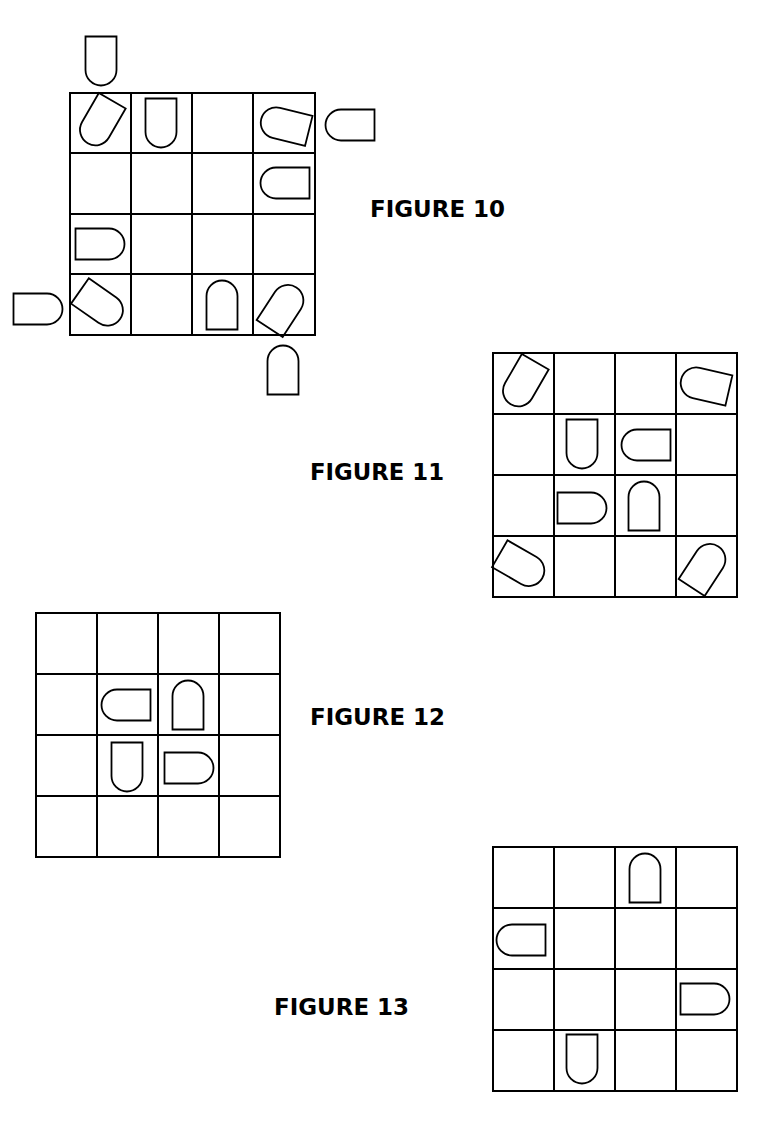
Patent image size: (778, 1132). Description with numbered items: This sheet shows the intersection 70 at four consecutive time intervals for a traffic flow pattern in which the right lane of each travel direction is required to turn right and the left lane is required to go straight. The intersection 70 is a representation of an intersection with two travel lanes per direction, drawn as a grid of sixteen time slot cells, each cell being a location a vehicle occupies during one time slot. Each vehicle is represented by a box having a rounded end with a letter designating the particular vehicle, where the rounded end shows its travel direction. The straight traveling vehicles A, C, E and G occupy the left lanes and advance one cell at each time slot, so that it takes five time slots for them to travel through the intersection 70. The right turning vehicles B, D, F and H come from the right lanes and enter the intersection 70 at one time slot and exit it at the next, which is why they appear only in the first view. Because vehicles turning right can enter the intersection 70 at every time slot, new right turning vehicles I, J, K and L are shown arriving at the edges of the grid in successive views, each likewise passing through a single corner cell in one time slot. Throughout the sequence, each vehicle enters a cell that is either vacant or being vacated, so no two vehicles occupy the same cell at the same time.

In FIG. 10, the intersection 70 is at (291, 57).
In FIG. 11, the intersection 70 is at (633, 319).
In FIG. 12, the intersection 70 is at (159, 587).
In FIG. 13, the intersection 70 is at (619, 821).
In FIG. 10, the straight traveling vehicle A is at (222, 305).
In FIG. 11, the straight traveling vehicle A is at (644, 506).
In FIG. 12, the straight traveling vehicle A is at (188, 705).
In FIG. 13, the straight traveling vehicle A is at (645, 878).
In FIG. 10, the right turning vehicle B is at (283, 308).
In FIG. 10, the straight traveling vehicle C is at (285, 183).
In FIG. 11, the straight traveling vehicle C is at (646, 445).
In FIG. 12, the straight traveling vehicle C is at (126, 705).
In FIG. 13, the straight traveling vehicle C is at (521, 940).
In FIG. 10, the right turning vehicle D is at (284, 125).
In FIG. 10, the straight traveling vehicle E is at (161, 122).
In FIG. 11, the straight traveling vehicle E is at (582, 444).
In FIG. 12, the straight traveling vehicle E is at (127, 767).
In FIG. 13, the straight traveling vehicle E is at (582, 1059).
In FIG. 10, the right turning vehicle F is at (99, 122).
In FIG. 10, the straight traveling vehicle G is at (99, 244).
In FIG. 11, the straight traveling vehicle G is at (582, 508).
In FIG. 12, the straight traveling vehicle G is at (189, 768).
In FIG. 13, the straight traveling vehicle G is at (705, 999).
In FIG. 10, the right turning vehicle H is at (100, 304).
In FIG. 10, the new right turning vehicle I is at (283, 370).
In FIG. 11, the new right turning vehicle I is at (705, 567).
In FIG. 10, the new right turning vehicle J is at (350, 125).
In FIG. 11, the new right turning vehicle J is at (705, 384).
In FIG. 10, the new right turning vehicle K is at (101, 60).
In FIG. 11, the new right turning vehicle K is at (522, 383).
In FIG. 10, the new right turning vehicle L is at (37, 309).
In FIG. 11, the new right turning vehicle L is at (521, 565).